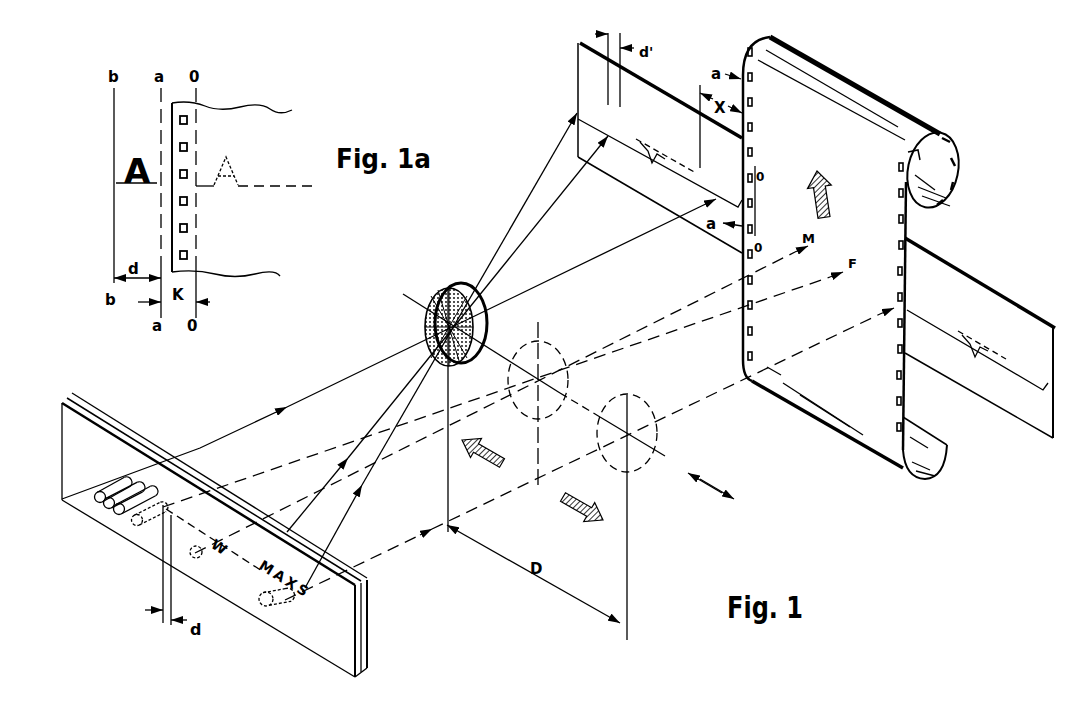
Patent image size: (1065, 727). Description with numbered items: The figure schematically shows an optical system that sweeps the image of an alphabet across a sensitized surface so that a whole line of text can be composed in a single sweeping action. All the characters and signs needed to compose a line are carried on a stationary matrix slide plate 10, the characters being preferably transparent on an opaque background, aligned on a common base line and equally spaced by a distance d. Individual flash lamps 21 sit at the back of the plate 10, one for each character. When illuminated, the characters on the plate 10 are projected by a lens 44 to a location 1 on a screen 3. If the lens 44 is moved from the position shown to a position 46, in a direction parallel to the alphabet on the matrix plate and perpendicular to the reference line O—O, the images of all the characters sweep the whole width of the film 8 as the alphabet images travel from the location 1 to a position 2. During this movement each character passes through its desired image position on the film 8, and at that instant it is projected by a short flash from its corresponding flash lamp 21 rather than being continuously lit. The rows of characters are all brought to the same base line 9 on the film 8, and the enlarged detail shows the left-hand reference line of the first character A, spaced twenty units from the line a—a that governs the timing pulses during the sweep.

In FIG. 1, the location 1 is at (661, 156).
In FIG. 1, the position 2 is at (980, 338).
In FIG. 1, the screen 3 is at (578, 77).
In FIG. 1A, the film 8 is at (228, 262).
In FIG. 1, the film 8 is at (853, 423).
In FIG. 1, the base line 9 is at (857, 279).
In FIG. 1, the matrix slide plate 10 is at (305, 625).
In FIG. 1, the flash lamps 21 is at (101, 501).
In FIG. 1, the lens 44 is at (438, 303).
In FIG. 1, the position 46 is at (659, 437).